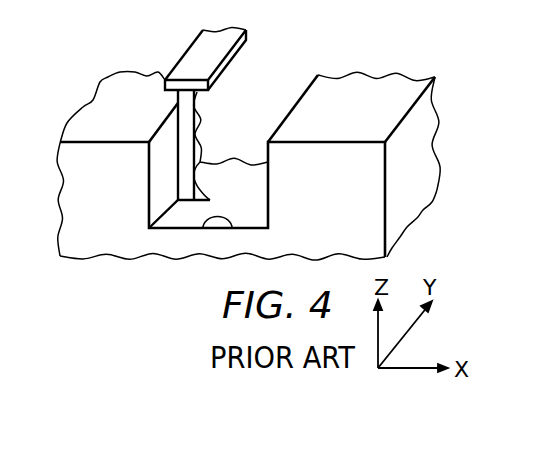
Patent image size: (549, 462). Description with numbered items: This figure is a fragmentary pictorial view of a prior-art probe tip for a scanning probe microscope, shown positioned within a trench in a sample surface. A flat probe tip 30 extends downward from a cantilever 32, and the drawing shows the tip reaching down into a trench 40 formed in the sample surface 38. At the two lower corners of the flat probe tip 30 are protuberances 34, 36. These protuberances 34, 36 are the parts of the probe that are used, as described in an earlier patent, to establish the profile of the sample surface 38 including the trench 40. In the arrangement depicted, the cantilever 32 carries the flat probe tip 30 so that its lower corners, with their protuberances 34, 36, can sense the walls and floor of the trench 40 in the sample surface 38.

The flat probe tip 30 is at (193, 120).
The cantilever 32 is at (187, 50).
The protuberance 34 is at (208, 200).
The protuberance 36 is at (174, 196).
The sample surface 38 is at (360, 110).
The trench 40 is at (203, 228).